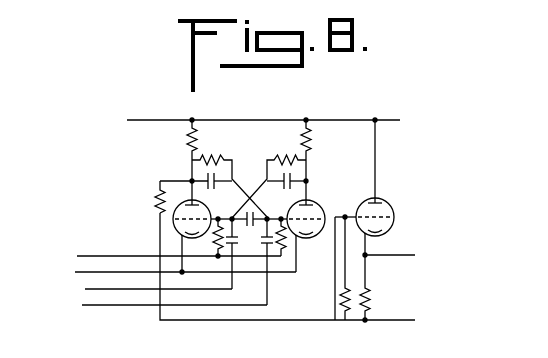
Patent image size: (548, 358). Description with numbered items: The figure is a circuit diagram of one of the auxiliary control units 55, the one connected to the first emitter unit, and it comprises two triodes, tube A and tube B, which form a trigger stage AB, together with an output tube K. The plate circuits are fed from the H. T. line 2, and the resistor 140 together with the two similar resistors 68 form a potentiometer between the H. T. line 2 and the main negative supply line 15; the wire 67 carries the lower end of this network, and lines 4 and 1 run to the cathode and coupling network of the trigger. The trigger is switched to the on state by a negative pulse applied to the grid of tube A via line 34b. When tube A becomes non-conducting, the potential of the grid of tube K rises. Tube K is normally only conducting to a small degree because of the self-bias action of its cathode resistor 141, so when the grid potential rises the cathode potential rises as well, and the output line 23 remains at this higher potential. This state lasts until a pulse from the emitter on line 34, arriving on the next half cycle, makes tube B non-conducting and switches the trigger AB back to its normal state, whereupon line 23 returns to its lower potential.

The auxiliary control unit 55 is at (270, 112).
The H. T. line 2 is at (151, 123).
The resistor 140 is at (199, 144).
The resistors 68 is at (155, 193).
The common return wire 67 is at (160, 232).
The tube A is at (202, 234).
The tube B is at (296, 234).
The tube K is at (364, 220).
The cathode resistor 141 is at (384, 277).
The line 23 is at (415, 255).
The main negative supply line 15 is at (415, 320).
The input lead 4 is at (88, 256).
The cathode lead 1 is at (78, 272).
The line 34b is at (136, 292).
The line 34 is at (158, 310).